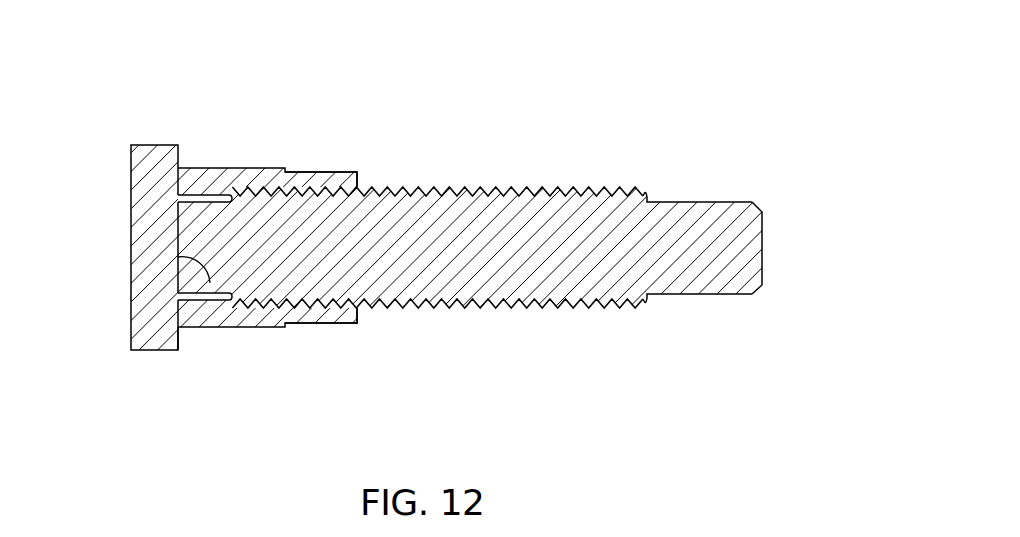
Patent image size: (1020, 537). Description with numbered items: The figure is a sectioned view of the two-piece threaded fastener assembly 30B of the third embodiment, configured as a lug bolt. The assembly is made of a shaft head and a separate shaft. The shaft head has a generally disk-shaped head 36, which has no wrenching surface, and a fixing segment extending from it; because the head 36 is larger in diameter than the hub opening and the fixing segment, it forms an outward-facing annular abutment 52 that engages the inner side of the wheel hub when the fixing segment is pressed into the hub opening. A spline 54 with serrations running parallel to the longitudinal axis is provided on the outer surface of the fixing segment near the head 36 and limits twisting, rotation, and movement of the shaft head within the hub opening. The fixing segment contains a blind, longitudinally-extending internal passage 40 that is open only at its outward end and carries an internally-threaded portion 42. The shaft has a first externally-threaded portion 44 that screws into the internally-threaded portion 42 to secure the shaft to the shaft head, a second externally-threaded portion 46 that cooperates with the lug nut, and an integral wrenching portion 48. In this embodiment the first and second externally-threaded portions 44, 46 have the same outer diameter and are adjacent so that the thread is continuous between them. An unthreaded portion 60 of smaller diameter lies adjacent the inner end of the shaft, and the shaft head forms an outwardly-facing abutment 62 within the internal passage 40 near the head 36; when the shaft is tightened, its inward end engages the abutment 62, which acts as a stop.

The threaded fastener assembly 30B is at (489, 239).
The head 36 is at (130, 192).
The internal passage 40 is at (178, 293).
The internally-threaded portion 42 is at (327, 172).
The first externally-threaded portion 44 is at (284, 183).
The second externally-threaded portion 46 is at (551, 186).
The wrenching portion 48 is at (697, 295).
The abutment 52 is at (178, 340).
The spline 54 is at (245, 168).
The unthreaded portion 60 is at (178, 257).
The abutment 62 is at (197, 195).